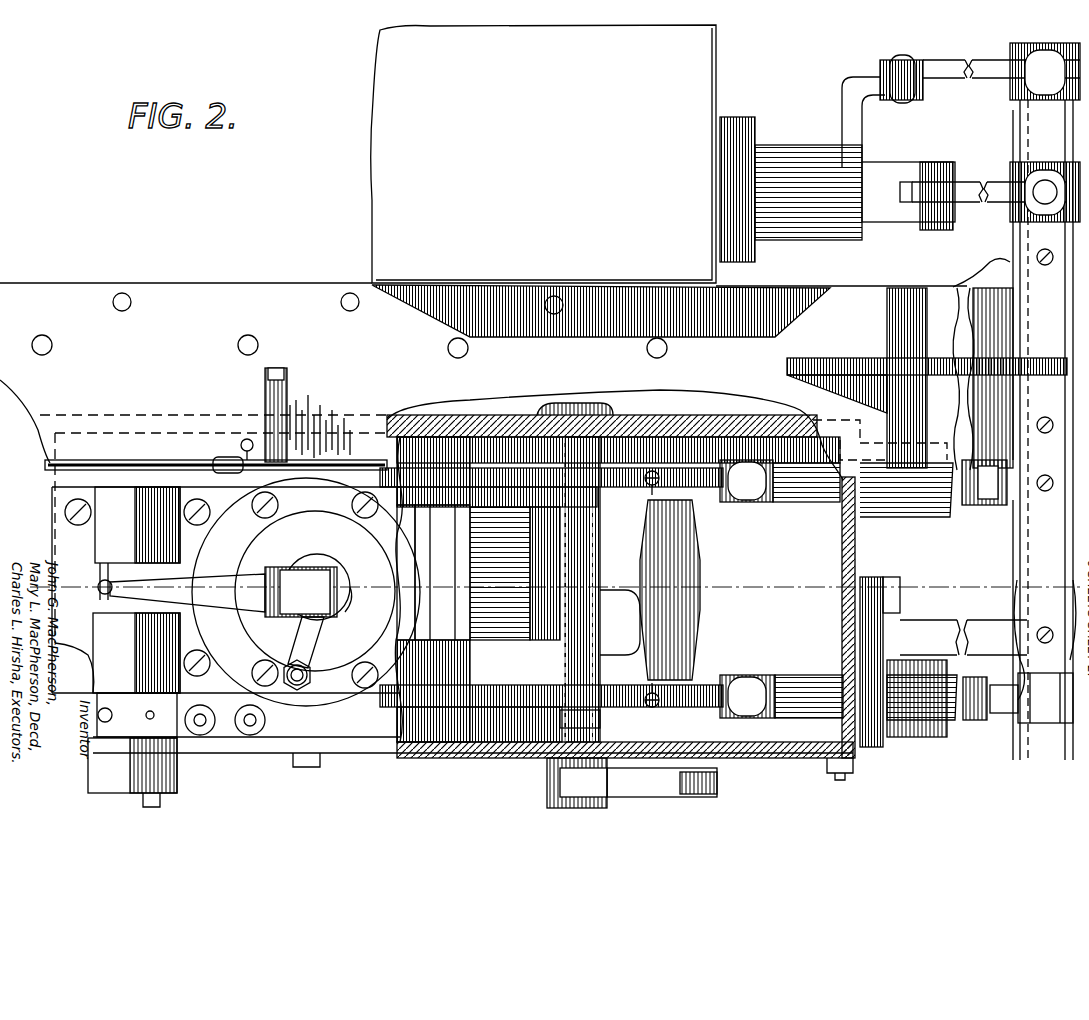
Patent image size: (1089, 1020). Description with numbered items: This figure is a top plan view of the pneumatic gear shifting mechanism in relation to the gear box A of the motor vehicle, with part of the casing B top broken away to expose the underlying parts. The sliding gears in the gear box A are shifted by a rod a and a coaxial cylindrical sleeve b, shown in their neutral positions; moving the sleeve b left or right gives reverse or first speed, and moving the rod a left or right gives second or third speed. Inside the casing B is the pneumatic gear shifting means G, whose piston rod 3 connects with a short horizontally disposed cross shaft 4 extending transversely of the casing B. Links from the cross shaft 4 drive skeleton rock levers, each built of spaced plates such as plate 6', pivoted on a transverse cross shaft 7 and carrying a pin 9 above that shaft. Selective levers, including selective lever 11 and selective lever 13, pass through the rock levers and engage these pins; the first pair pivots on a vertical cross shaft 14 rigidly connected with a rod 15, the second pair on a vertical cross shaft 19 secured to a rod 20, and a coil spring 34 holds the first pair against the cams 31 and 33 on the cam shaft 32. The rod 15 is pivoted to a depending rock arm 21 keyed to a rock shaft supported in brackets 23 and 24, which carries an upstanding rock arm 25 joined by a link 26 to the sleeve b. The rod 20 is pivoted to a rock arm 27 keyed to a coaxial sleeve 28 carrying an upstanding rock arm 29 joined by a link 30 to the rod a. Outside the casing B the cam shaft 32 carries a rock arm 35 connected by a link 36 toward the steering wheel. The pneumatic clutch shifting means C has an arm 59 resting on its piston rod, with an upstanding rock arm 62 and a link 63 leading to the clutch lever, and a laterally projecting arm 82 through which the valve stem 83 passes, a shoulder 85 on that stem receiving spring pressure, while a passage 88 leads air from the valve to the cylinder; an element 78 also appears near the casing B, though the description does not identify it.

The piston rod 3 is at (1070, 576).
The cross shaft 4 is at (692, 575).
The plate 6' is at (420, 581).
The cross shaft 7 is at (437, 565).
The pin 9 is at (472, 440).
The selective lever 11 is at (698, 690).
The selective lever 13 is at (697, 480).
The vertical cross shaft 14 is at (762, 678).
The rod 15 is at (808, 680).
The vertical cross shaft 19 is at (766, 503).
The rod 20 is at (817, 503).
The depending rock arm 21 is at (1012, 726).
The bracket 23 is at (943, 635).
The bracket 24 is at (925, 297).
The upstanding rock arm 25 is at (1036, 62).
The link 26 is at (943, 66).
The rock arm 27 is at (997, 508).
The sleeve 28 is at (1003, 260).
The upstanding rock arm 29 is at (1015, 207).
The link 30 is at (977, 186).
The cam 31 is at (608, 707).
The cam shaft 32 is at (602, 642).
The cam 33 is at (615, 460).
The coil spring 34 is at (700, 488).
The rock arm 35 is at (578, 786).
The link 36 is at (712, 796).
The arm 59 is at (212, 585).
The upstanding rock arm 62 is at (110, 702).
The link 63 is at (130, 768).
The pin 78 is at (322, 468).
The laterally projecting arm 82 is at (318, 650).
The valve stem 83 is at (311, 681).
The shoulder 85 is at (290, 664).
The passage 88 is at (400, 642).
The rod a is at (885, 172).
The cylindrical sleeve b is at (770, 152).
The gear box A is at (543, 154).
The casing B is at (347, 371).
The pneumatic clutch shifting means C is at (306, 592).
The pneumatic gear shifting means G is at (515, 573).